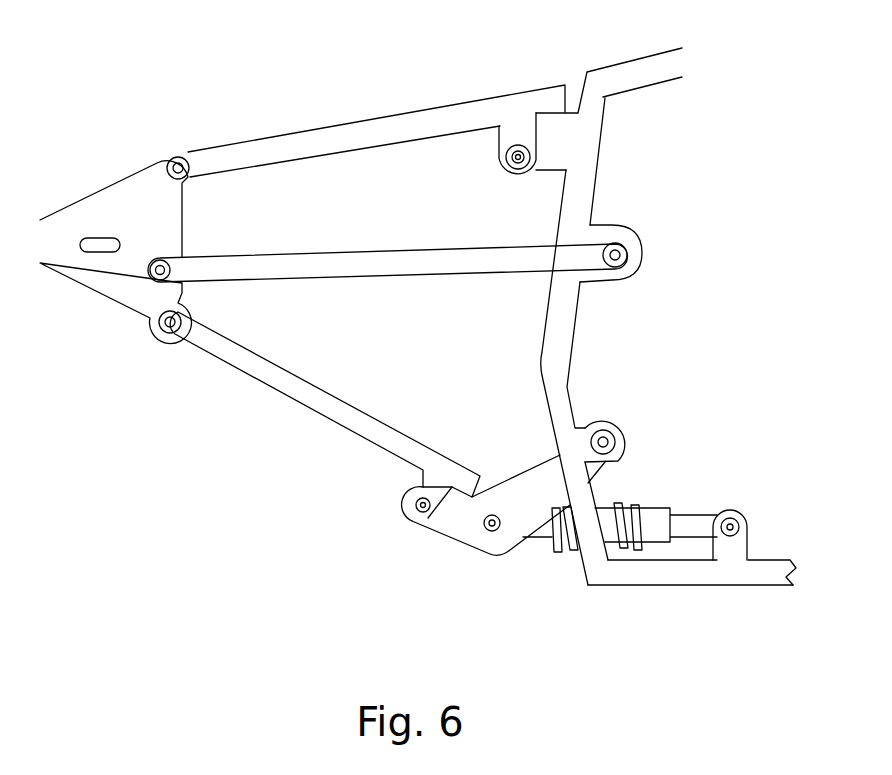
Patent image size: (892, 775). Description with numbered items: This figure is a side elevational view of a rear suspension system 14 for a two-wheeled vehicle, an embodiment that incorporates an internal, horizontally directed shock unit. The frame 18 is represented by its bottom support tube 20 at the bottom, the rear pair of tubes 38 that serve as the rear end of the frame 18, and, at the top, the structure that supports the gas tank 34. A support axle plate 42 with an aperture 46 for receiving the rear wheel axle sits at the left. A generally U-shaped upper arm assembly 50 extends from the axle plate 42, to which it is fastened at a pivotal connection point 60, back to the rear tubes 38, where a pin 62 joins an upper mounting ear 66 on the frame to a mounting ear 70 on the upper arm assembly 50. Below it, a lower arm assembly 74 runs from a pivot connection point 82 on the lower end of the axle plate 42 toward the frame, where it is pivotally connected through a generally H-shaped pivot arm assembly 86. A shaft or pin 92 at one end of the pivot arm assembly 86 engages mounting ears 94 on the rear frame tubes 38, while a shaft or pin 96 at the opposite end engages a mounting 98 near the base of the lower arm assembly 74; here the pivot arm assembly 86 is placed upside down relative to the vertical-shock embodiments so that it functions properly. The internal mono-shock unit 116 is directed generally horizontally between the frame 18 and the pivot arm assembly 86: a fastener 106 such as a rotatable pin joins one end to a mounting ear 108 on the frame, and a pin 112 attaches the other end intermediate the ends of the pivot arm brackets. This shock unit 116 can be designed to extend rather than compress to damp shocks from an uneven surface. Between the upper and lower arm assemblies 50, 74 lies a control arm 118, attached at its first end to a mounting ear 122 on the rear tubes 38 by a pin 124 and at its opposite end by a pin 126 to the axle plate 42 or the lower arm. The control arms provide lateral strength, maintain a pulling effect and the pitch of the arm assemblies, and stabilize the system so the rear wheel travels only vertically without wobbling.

The rear suspension system 14 is at (213, 477).
The frame 18 is at (690, 588).
The bottom support tubes 20 is at (627, 588).
The gas tank 34 is at (678, 48).
The rear pair of tubes 38 is at (572, 330).
The support axle plate 42 is at (117, 203).
The aperture 46 is at (90, 246).
The upper arm assembly 50 is at (361, 133).
The pivotal connection point 60 is at (184, 160).
The pin 62 is at (512, 162).
The upper mounting ear 66 is at (548, 165).
The mounting ear 70 is at (513, 133).
The lower arm assembly 74 is at (278, 385).
The pivot connection point 82 is at (166, 336).
The pivot arm assembly 86 is at (517, 480).
The shaft or pin 92 is at (619, 446).
The mounting ears 94 is at (596, 476).
The shaft or pin 96 is at (419, 507).
The mounting 98 is at (420, 490).
The fastener 106 is at (736, 518).
The mounting ear 108 is at (760, 540).
The pin 112 is at (490, 532).
The internal mono-shock unit 116 is at (560, 556).
The control arm 118 is at (318, 265).
The mounting ear 122 is at (607, 226).
The pin 124 is at (623, 257).
The pin 126 is at (148, 276).